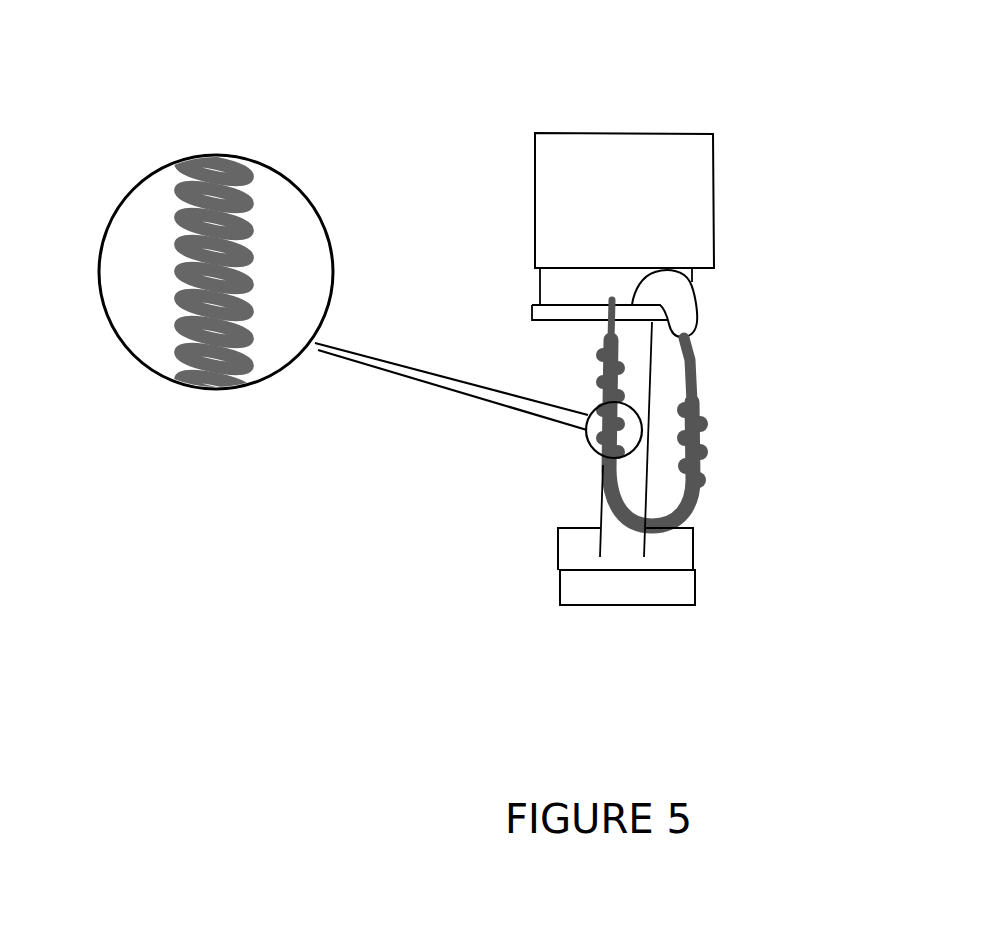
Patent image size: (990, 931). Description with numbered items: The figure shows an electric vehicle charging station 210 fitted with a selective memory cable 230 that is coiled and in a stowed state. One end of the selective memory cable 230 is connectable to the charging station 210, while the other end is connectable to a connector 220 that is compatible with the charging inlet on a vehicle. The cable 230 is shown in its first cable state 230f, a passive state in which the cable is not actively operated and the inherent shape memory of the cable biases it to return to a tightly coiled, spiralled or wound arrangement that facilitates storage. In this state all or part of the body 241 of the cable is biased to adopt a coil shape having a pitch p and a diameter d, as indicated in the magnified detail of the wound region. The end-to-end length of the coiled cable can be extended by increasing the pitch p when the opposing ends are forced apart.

The charging station 210 is at (645, 200).
The connector 220 is at (685, 303).
The selective memory cable 230 is at (707, 397).
The first cable state 230f is at (807, 502).
The cable body 241 is at (608, 462).
The diameter d is at (249, 180).
The pitch p is at (245, 238).